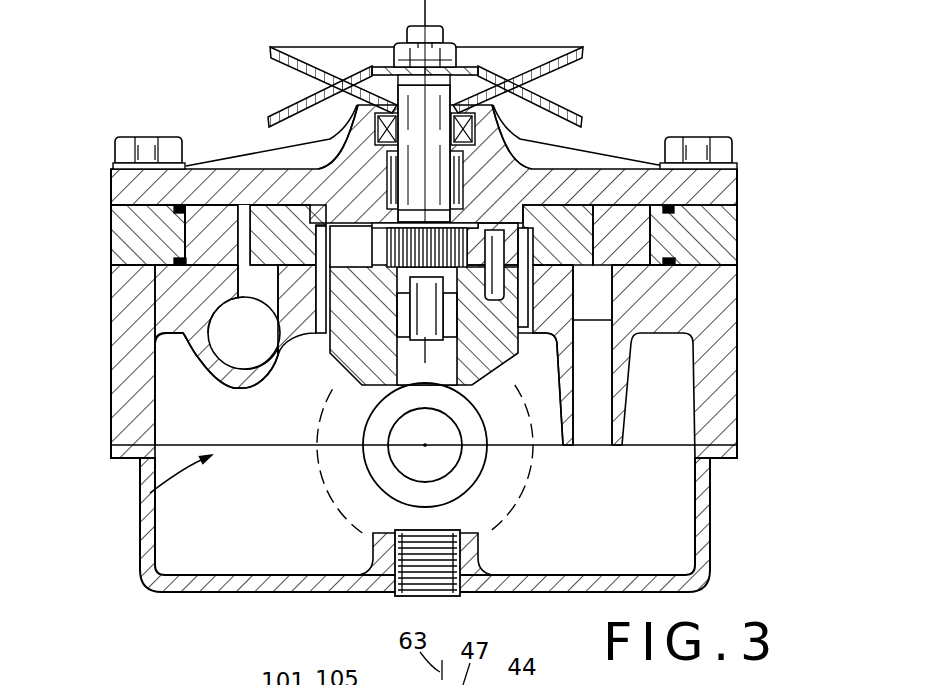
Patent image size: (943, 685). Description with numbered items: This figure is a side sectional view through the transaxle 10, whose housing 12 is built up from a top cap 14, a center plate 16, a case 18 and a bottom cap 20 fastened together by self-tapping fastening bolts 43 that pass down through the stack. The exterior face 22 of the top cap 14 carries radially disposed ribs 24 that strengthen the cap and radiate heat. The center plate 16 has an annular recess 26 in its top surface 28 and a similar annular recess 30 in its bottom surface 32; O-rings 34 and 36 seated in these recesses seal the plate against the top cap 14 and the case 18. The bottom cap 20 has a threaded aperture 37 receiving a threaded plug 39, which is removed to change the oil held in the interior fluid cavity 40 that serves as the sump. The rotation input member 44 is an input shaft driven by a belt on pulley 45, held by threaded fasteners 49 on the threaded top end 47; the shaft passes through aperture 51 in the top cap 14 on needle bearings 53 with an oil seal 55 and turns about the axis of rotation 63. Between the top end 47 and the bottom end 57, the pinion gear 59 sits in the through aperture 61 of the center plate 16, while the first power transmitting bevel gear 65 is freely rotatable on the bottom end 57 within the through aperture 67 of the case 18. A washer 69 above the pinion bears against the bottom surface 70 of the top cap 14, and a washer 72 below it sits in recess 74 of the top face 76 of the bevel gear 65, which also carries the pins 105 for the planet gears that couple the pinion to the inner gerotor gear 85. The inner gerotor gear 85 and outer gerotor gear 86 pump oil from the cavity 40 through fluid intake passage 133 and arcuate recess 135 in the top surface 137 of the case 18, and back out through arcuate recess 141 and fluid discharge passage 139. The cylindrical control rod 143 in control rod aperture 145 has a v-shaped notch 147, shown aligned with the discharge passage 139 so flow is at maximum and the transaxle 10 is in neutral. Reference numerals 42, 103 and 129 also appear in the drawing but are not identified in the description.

The transaxle 10 is at (655, 53).
The housing 12 is at (750, 311).
The top cap 14 is at (736, 185).
The center plate 16 is at (728, 238).
The case 18 is at (731, 398).
The bottom cap 20 is at (262, 585).
The exterior face 22 is at (600, 155).
The ribs 24 is at (258, 150).
The annular recess 26 is at (178, 220).
The top surface 28 is at (172, 215).
The annular recess 30 is at (180, 258).
The bottom surface 32 is at (135, 266).
The O-ring 34 is at (193, 164).
The O-ring 36 is at (176, 260).
The threaded aperture 37 is at (384, 586).
The threaded plug 39 is at (448, 594).
The interior fluid cavity 40 is at (605, 512).
The housing left wall 42 is at (111, 170).
The self-tapping fastening bolts 43 is at (140, 137).
The rotation input member 44 is at (495, 92).
The pulley 45 is at (315, 47).
The top end 47 is at (437, 35).
The threaded fasteners 49 is at (390, 58).
The aperture 51 is at (318, 110).
The needle bearings 53 is at (461, 175).
The oil seal 55 is at (520, 106).
The bottom end 57 is at (392, 385).
The pinion gear 59 is at (398, 290).
The through aperture 61 is at (646, 214).
The axis of rotation 63 is at (425, 12).
The first power transmitting bevel gear 65 is at (320, 374).
The through aperture 67 is at (540, 306).
The washer 69 is at (466, 212).
The bottom surface 70 is at (384, 172).
The washer 72 is at (458, 278).
The recess 74 is at (392, 265).
The top face 76 is at (351, 246).
The inner gerotor gear 85 is at (265, 249).
The outer gerotor gear 86 is at (201, 249).
The cover plate surface 103 is at (212, 205).
The pin 105 is at (502, 342).
The flow path 129 is at (150, 493).
The fluid intake passage 133 is at (592, 402).
The arcuate recess 135 is at (597, 296).
The top surface 137 is at (720, 258).
The fluid discharge passage 139 is at (252, 388).
The arcuate recess 141 is at (246, 281).
The cylindrical control rod 143 is at (220, 355).
The control rod aperture 145 is at (210, 320).
The v-shaped notch 147 is at (241, 345).